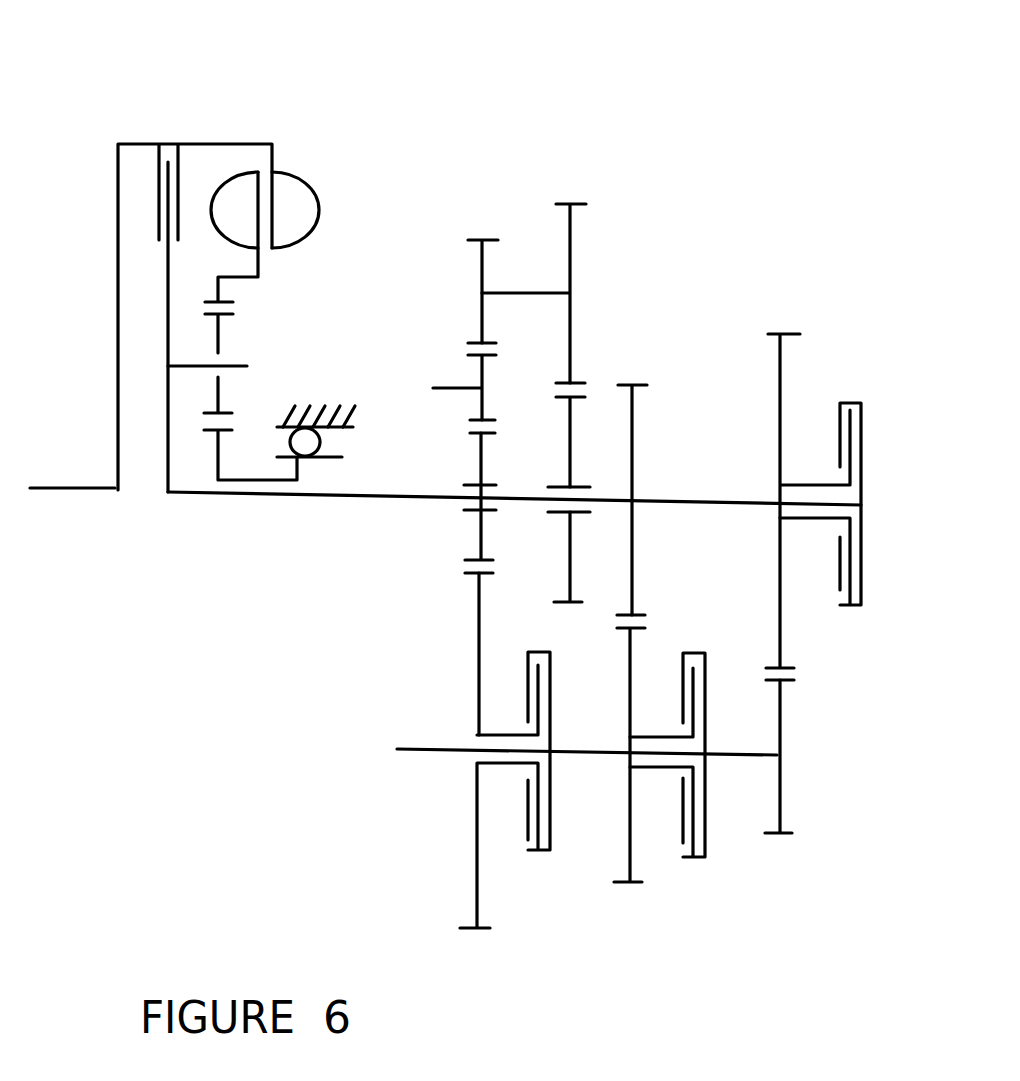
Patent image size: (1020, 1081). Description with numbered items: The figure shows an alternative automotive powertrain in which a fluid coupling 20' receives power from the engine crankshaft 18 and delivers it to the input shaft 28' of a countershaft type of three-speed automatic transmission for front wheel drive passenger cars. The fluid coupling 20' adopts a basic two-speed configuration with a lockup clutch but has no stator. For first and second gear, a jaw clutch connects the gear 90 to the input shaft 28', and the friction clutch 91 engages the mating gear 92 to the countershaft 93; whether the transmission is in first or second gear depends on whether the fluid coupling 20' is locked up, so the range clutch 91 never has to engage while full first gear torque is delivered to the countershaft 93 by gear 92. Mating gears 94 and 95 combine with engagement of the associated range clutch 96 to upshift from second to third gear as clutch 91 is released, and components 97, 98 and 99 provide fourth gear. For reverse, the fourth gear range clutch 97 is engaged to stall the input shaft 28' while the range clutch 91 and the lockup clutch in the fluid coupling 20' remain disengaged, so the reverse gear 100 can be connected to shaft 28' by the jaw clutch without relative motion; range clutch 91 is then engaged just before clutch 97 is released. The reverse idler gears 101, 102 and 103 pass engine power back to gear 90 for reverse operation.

The engine crankshaft 18 is at (70, 491).
The fluid coupling 20' is at (242, 248).
The input shaft 28' is at (514, 532).
The gear 90 is at (479, 543).
The friction clutch 91 is at (550, 833).
The mating gear 92 is at (478, 610).
The countershaft 93 is at (435, 749).
The mating gear 94 is at (633, 448).
The mating gear 95 is at (631, 857).
The range clutch 96 is at (705, 828).
The fourth gear range clutch 97 is at (862, 565).
The fourth gear component 98 is at (781, 632).
The fourth gear component 99 is at (781, 700).
The reverse gear 100 is at (570, 418).
The reverse idler gear 101 is at (571, 327).
The reverse idler gear 102 is at (481, 326).
The reverse idler gear 103 is at (481, 375).